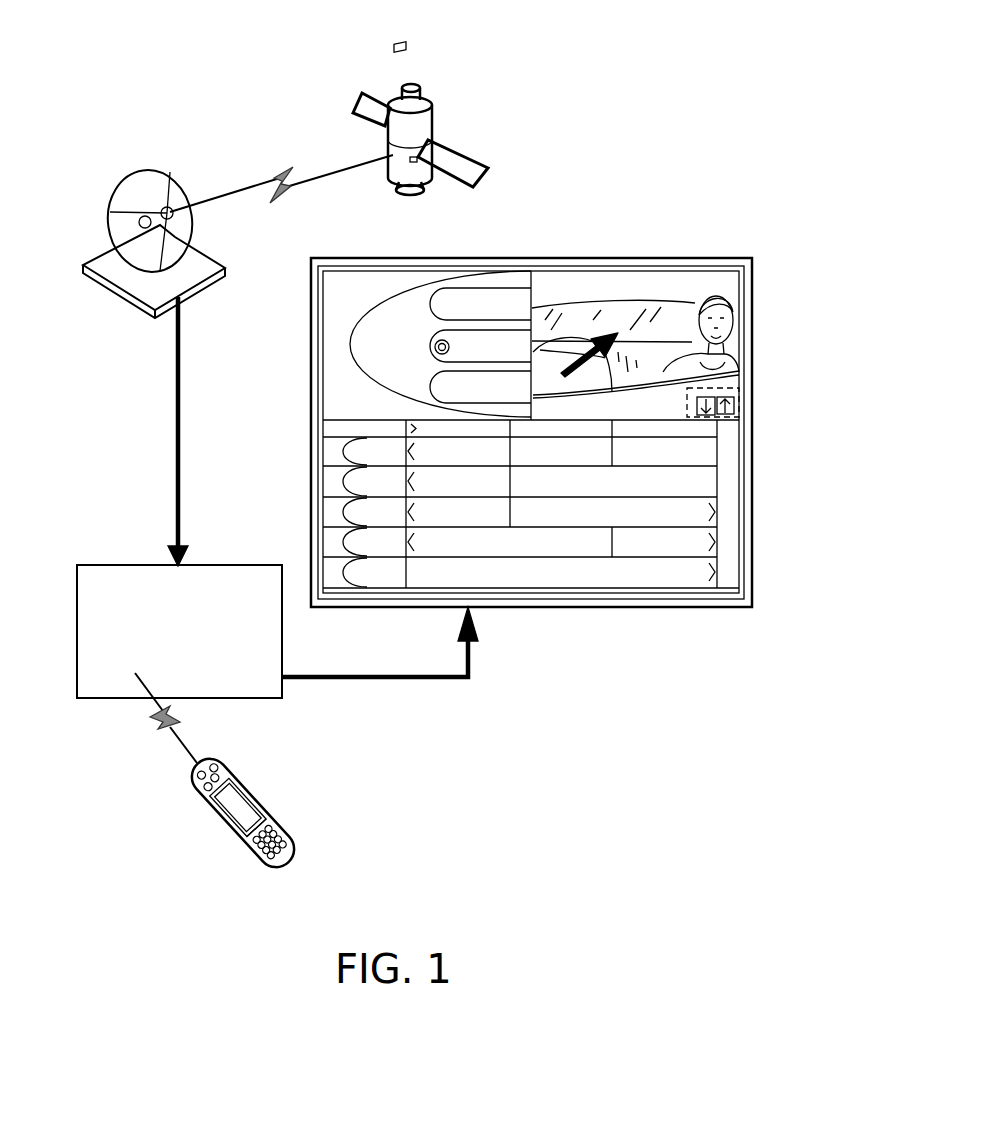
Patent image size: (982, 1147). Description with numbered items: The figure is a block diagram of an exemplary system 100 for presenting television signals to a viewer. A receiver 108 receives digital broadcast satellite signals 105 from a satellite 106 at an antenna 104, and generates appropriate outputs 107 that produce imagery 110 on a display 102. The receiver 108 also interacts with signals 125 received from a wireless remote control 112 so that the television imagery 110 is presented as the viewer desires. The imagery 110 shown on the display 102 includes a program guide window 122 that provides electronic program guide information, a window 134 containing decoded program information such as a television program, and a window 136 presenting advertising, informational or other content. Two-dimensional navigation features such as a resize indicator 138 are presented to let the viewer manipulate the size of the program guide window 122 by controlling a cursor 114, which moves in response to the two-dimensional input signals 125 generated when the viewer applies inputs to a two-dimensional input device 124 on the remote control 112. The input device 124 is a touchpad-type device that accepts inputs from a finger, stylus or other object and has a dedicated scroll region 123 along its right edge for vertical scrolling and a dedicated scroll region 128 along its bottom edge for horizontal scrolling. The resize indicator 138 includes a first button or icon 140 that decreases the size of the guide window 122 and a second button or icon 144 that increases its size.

The system 100 is at (530, 34).
The display 102 is at (740, 609).
The antenna 104 is at (185, 293).
The signals 105 is at (180, 437).
The satellite 106 is at (427, 128).
The outputs 107 is at (412, 683).
The receiver 108 is at (179, 631).
The imagery 110 is at (305, 346).
The wireless remote control 112 is at (287, 828).
The cursor 114 is at (592, 336).
The program guide window 122 is at (763, 418).
The scroll region 123 is at (257, 807).
The two-dimensional input device 124 is at (228, 808).
The signals 125 is at (192, 708).
The scroll region 128 is at (245, 833).
The window 134 is at (642, 282).
The window 136 is at (350, 283).
The resize indicator 138 is at (730, 388).
The first button or icon 140 is at (705, 397).
The second button or icon 144 is at (733, 407).